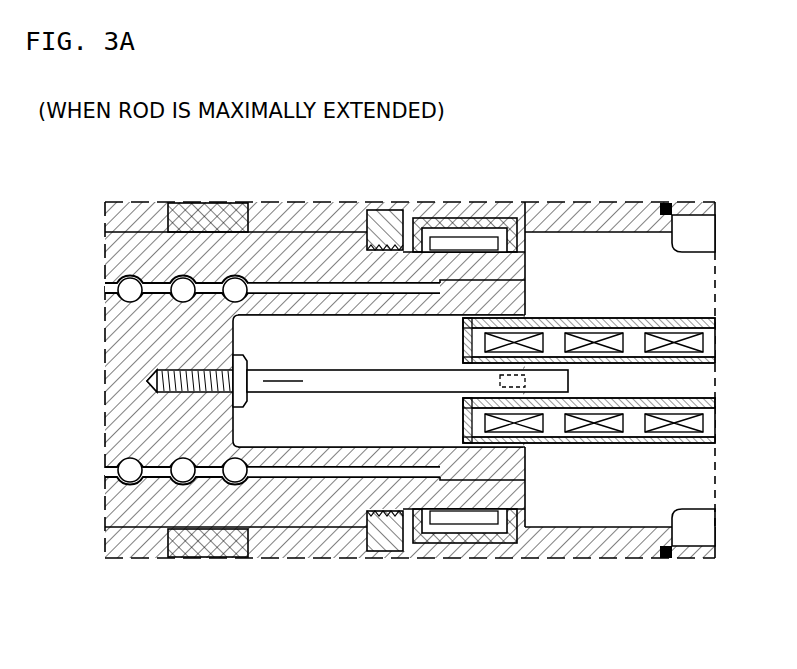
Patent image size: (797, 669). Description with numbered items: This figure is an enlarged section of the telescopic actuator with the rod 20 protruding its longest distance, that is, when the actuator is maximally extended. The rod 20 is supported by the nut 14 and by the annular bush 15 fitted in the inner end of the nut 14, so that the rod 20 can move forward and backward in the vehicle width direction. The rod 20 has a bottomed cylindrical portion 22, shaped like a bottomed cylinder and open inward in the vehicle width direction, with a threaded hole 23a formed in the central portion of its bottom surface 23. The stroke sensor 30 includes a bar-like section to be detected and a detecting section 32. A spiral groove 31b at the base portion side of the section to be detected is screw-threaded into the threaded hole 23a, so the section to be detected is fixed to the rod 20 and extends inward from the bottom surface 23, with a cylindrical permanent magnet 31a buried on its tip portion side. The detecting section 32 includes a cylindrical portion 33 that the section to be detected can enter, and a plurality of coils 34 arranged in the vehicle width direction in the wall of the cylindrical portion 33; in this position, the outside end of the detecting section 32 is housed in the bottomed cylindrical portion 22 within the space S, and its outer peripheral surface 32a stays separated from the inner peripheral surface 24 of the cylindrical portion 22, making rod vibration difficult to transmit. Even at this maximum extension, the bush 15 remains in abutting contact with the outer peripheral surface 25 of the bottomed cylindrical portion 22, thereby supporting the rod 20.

The nut 14 is at (193, 507).
The bush 15 is at (483, 480).
The rod 20 is at (115, 435).
The bottomed cylindrical portion 22 is at (290, 460).
The bottom surface 23 is at (238, 342).
The threaded hole 23a is at (148, 376).
The inner peripheral surface 24 is at (298, 323).
The outer peripheral surface 25 is at (331, 297).
The stroke sensor 30 is at (648, 288).
The permanent magnet 31a is at (525, 381).
The spiral groove 31b is at (152, 391).
The detecting section 32 is at (589, 313).
The outer peripheral surface 32a is at (663, 325).
The cylindrical portion 33 is at (714, 445).
The coils 34 is at (552, 440).
The space S is at (566, 246).